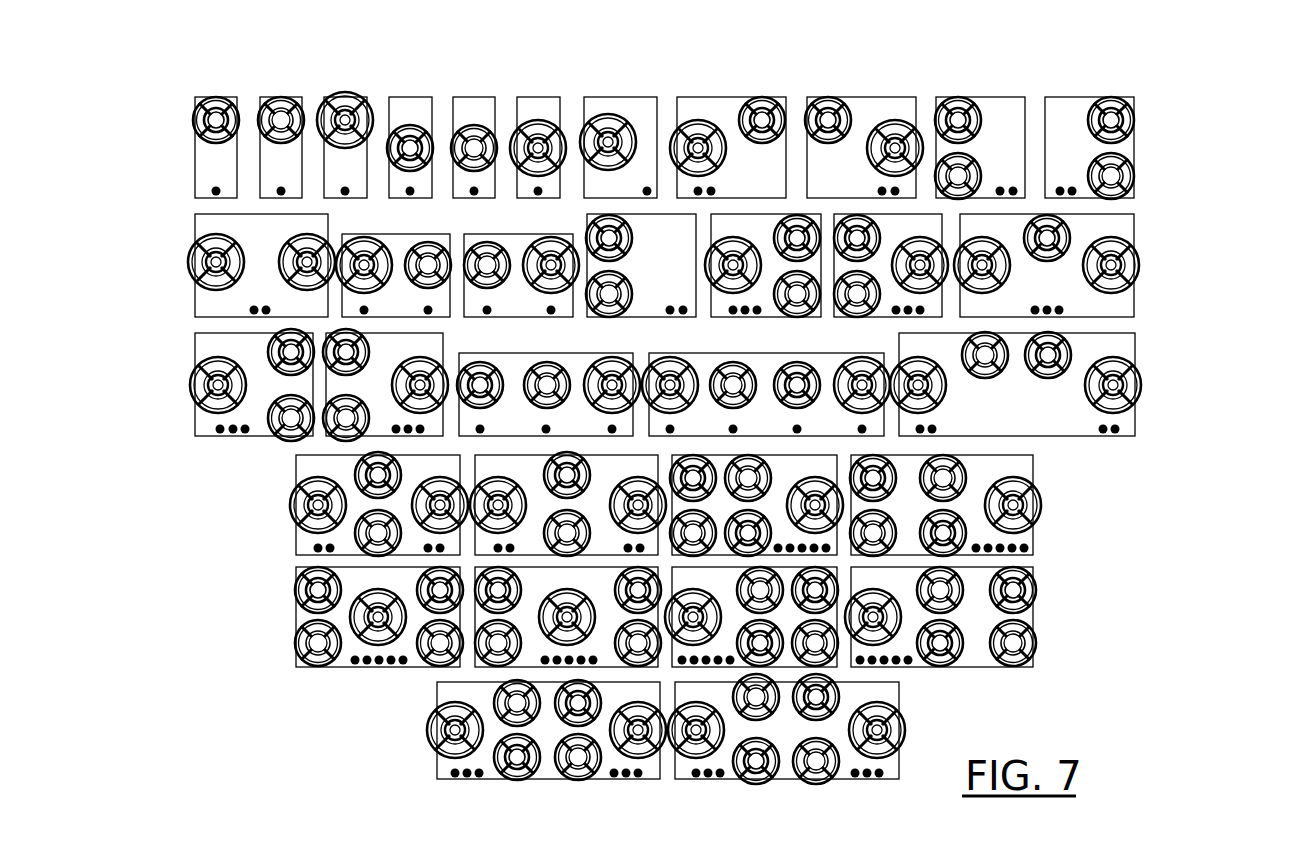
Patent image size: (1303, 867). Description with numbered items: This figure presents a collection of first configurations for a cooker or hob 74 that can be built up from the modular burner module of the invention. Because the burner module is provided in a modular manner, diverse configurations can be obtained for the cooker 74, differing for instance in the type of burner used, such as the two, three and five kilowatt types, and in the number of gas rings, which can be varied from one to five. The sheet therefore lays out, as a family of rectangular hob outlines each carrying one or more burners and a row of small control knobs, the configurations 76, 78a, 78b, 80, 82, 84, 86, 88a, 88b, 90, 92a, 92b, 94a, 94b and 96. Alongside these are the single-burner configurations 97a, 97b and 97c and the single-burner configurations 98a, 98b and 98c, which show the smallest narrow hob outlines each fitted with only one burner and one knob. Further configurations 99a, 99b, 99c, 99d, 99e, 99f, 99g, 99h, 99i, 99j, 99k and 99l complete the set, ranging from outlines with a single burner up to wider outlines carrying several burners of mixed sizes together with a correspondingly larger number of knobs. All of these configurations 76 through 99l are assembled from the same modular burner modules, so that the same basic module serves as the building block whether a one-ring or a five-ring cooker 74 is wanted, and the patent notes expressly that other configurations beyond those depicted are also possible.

The cooker 74 is at (1172, 103).
The configuration 76 is at (1115, 345).
The configuration 78a is at (295, 490).
The configuration 78b is at (640, 470).
The configuration 80 is at (757, 313).
The configuration 82 is at (880, 313).
The configuration 84 is at (1000, 103).
The configuration 86 is at (1077, 103).
The configuration 88a is at (295, 628).
The configuration 88b is at (566, 588).
The configuration 90 is at (665, 362).
The configuration 92a is at (730, 588).
The configuration 92b is at (1035, 610).
The configuration 94a is at (825, 470).
The configuration 94b is at (1035, 530).
The configuration 96 is at (532, 360).
The configuration 97a is at (206, 96).
The configuration 97b is at (281, 100).
The configuration 97c is at (343, 98).
The configuration 98a is at (418, 100).
The configuration 98b is at (478, 103).
The configuration 98c is at (550, 103).
The configuration 99a is at (637, 100).
The configuration 99b is at (722, 103).
The configuration 99c is at (878, 103).
The configuration 99d is at (213, 305).
The configuration 99e is at (417, 243).
The configuration 99f is at (521, 243).
The configuration 99g is at (688, 250).
The configuration 99h is at (1125, 232).
The configuration 99i is at (200, 350).
The configuration 99j is at (438, 352).
The configuration 99k is at (437, 772).
The configuration 99l is at (880, 772).